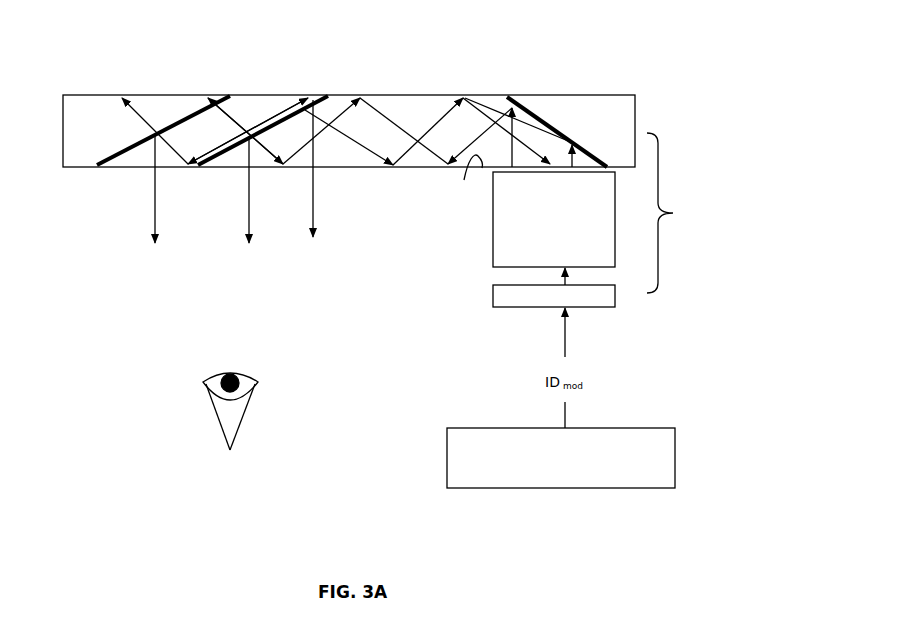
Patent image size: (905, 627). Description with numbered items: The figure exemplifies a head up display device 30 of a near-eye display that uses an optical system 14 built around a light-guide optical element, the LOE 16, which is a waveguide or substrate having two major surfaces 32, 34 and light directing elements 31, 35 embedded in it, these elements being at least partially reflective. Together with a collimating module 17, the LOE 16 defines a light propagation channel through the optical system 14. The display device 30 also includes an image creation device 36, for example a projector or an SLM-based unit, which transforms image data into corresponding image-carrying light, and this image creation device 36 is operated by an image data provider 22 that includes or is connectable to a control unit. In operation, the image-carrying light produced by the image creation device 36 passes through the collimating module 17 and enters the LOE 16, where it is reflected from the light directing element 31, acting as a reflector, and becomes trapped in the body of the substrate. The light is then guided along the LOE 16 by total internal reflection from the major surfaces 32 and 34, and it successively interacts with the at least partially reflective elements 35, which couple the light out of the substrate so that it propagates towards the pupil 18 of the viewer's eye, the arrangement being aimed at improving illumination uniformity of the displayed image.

The optical system 14 is at (680, 213).
The LOE 16 is at (123, 87).
The collimating module 17 is at (493, 227).
The pupil 18 is at (250, 415).
The image data provider 22 is at (660, 427).
The head up display device 30 is at (752, 116).
The light directing element 31 is at (553, 133).
The major surface 32 is at (550, 95).
The major surface 34 is at (464, 180).
The at least partially reflective elements 35 is at (305, 110).
The image creation device 36 is at (493, 293).